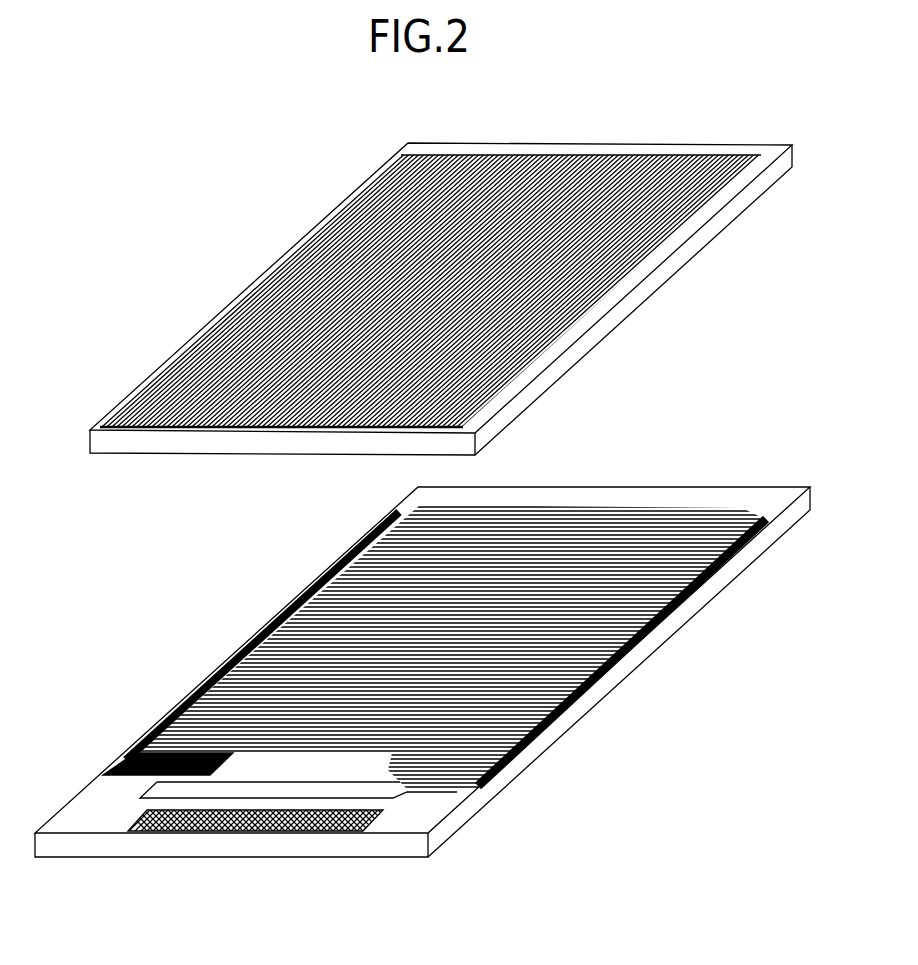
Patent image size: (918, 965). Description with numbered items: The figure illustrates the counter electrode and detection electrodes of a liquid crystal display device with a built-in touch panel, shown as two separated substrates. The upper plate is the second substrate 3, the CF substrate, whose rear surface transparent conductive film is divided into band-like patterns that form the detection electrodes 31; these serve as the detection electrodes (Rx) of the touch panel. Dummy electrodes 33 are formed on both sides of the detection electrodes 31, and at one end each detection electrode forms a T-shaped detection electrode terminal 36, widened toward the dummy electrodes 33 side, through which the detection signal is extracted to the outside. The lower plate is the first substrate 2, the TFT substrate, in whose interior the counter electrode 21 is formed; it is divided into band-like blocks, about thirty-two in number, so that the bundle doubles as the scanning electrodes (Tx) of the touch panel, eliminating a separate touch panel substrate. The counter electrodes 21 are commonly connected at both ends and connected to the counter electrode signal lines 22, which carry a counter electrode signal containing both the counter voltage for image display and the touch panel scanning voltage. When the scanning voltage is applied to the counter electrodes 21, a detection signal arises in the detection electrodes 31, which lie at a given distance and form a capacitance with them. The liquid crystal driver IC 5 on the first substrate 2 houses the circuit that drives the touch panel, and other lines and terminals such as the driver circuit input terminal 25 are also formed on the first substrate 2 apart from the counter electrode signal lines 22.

The first substrate 2 is at (630, 484).
The counter electrode 21 is at (660, 512).
The counter electrode signal lines 22 is at (673, 626).
The driver circuit input terminal 25 is at (197, 835).
The second substrate 3 is at (527, 150).
The detection electrodes 31 is at (657, 122).
The dummy electrodes 33 is at (673, 152).
The detection electrode terminal 36 is at (160, 433).
The liquid crystal driver IC 5 is at (457, 793).